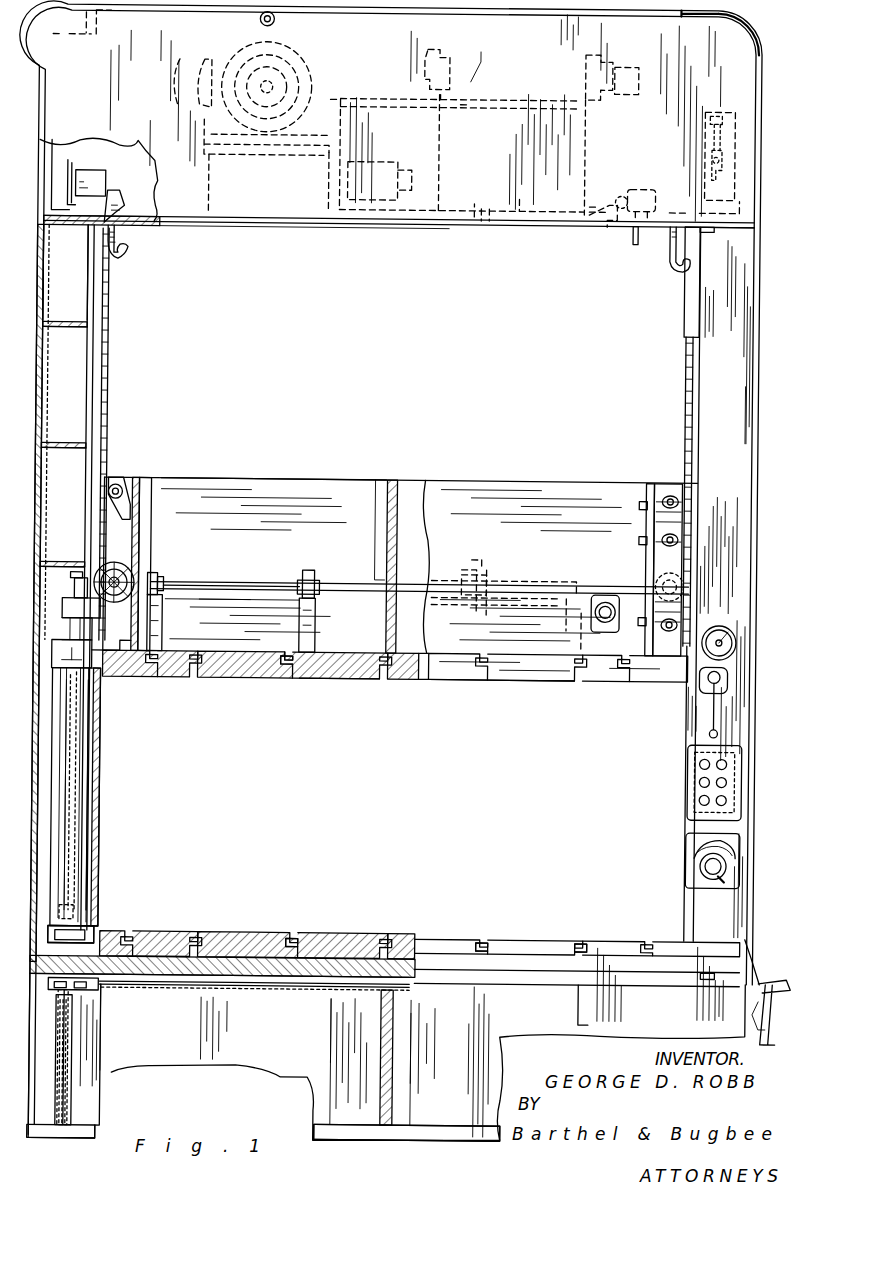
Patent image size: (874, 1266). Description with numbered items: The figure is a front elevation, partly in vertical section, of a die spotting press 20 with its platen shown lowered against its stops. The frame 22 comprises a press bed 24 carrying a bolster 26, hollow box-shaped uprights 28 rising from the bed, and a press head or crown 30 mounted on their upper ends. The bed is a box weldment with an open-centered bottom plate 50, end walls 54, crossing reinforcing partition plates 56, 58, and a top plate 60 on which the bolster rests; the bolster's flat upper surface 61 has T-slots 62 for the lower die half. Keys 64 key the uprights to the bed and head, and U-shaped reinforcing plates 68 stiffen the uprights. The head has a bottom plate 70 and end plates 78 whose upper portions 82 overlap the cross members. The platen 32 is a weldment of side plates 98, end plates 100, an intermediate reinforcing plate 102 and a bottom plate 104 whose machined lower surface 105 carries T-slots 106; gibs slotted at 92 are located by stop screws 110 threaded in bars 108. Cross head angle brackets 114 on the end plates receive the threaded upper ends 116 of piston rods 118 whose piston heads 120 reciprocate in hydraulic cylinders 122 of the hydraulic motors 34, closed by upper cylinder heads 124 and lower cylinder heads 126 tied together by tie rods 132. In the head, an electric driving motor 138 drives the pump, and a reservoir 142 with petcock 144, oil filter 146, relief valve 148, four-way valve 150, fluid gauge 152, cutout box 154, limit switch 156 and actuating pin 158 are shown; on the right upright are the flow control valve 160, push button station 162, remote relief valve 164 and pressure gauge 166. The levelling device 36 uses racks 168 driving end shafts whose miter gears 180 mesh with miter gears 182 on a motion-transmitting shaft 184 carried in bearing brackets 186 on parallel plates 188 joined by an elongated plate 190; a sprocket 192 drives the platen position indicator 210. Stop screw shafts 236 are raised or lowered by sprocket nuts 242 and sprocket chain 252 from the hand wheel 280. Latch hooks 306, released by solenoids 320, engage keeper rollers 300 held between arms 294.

The die spotting press 20 is at (762, 62).
The frame 22 is at (762, 215).
The press bed 24 is at (478, 1146).
The bolster 26 is at (348, 930).
The uprights 28 is at (60, 380).
The press head or crown 30 is at (712, 14).
The platen 32 is at (398, 478).
The hydraulic motors 34 is at (105, 790).
The automatic platen levelling device 36 is at (175, 570).
The bottom plate 50 is at (395, 1142).
The end walls 54 is at (75, 1046).
The reinforcing partition plate 56 is at (283, 1070).
The reinforcing partition plate 58 is at (378, 1018).
The top plate 60 is at (293, 932).
The upper surface 61 is at (538, 940).
The T-slots 62 is at (482, 938).
The keys 64 is at (716, 233).
The reinforcing plates 68 is at (65, 310).
The bottom plate 70 is at (150, 222).
The end plates 78 is at (68, 145).
The upper portions 82 is at (108, 12).
The slots 92 is at (668, 495).
The side plates 98 is at (245, 500).
The end plates 100 is at (148, 490).
The intermediate reinforcing plate 102 is at (382, 482).
The platen bottom plate 104 is at (360, 678).
The lower surface 105 is at (470, 678).
The T-slots 106 is at (292, 678).
The bars 108 is at (648, 480).
The stop screws 110 is at (640, 500).
The cross head angle brackets 114 is at (100, 665).
The threaded upper ends 116 is at (78, 575).
The piston rods 118 is at (163, 630).
The piston heads 120 is at (98, 908).
The hydraulic cylinders 122 is at (66, 735).
The upper cylinder heads 124 is at (124, 655).
The lower cylinder heads 126 is at (100, 930).
The tie rods 132 is at (90, 770).
The electric driving motor 138 is at (305, 50).
The hydraulic fluid tank or reservoir 142 is at (590, 160).
The petcock 144 is at (600, 226).
The oil filter 146 is at (415, 165).
The relief valve 148 is at (458, 57).
The four-way valve 150 is at (612, 100).
The hydraulic fluid gauge 152 is at (736, 112).
The cutout box 154 is at (736, 147).
The limit switch 156 is at (636, 190).
The limit switch actuating pin 158 is at (630, 240).
The flow control valve 160 is at (700, 862).
The push button press control switch station 162 is at (688, 752).
The remote relief valve 164 is at (712, 710).
The hydraulic fluid pressure gauge 166 is at (705, 655).
The toothed racks 168 is at (106, 385).
The miter gear 180 is at (122, 565).
The miter gear 182 is at (150, 572).
The motion-transmitting shaft 184 is at (210, 580).
The bearing brackets 186 is at (318, 578).
The parallel plates 188 is at (316, 640).
The elongated plate 190 is at (270, 598).
The sprocket 192 is at (600, 565).
The platen position indicator 210 is at (592, 605).
The stop screw shafts 236 is at (90, 1068).
The sprocket nuts 242 is at (80, 990).
The sprocket chain 252 is at (270, 990).
The hand wheel 280 is at (745, 960).
The arms 294 is at (140, 500).
The keeper roller 300 is at (116, 480).
The latch hook 306 is at (130, 245).
The solenoid 320 is at (96, 170).